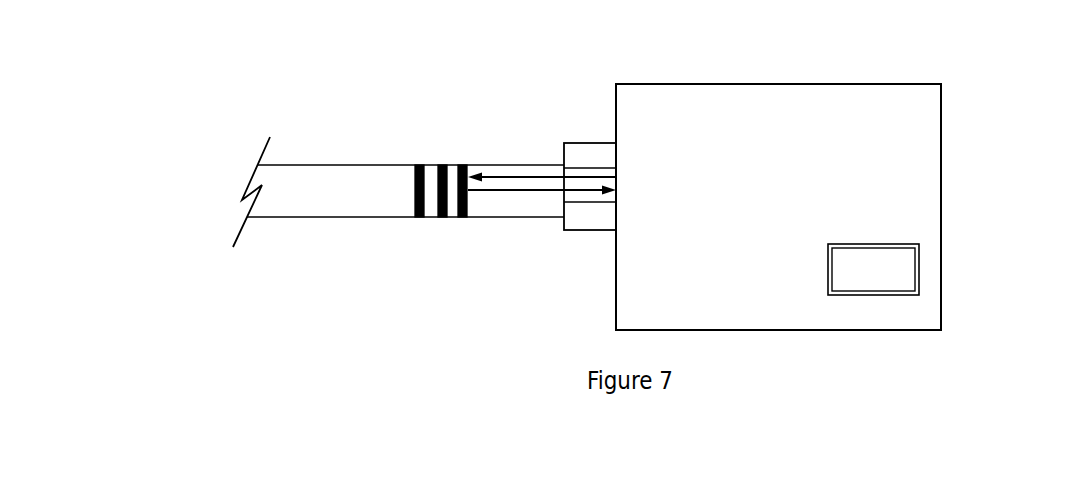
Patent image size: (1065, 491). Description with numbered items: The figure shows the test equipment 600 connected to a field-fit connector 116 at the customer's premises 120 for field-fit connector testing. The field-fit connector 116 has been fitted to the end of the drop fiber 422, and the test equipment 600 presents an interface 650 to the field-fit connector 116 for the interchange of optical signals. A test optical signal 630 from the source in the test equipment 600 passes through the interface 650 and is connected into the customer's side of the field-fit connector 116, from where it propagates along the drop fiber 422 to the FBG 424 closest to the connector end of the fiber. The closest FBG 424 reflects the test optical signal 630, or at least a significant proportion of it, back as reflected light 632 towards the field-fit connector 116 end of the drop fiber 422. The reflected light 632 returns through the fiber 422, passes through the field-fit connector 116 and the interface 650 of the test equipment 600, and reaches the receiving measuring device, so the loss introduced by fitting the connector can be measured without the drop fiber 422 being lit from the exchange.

The customer's premises 120 is at (817, 169).
The test equipment 600 is at (830, 147).
The field-fit connector 116 is at (590, 172).
The drop fiber 422 is at (398, 193).
The FBG 424 is at (441, 175).
The test optical signal 630 is at (505, 180).
The reflected light 632 is at (525, 192).
The interface 650 is at (646, 157).